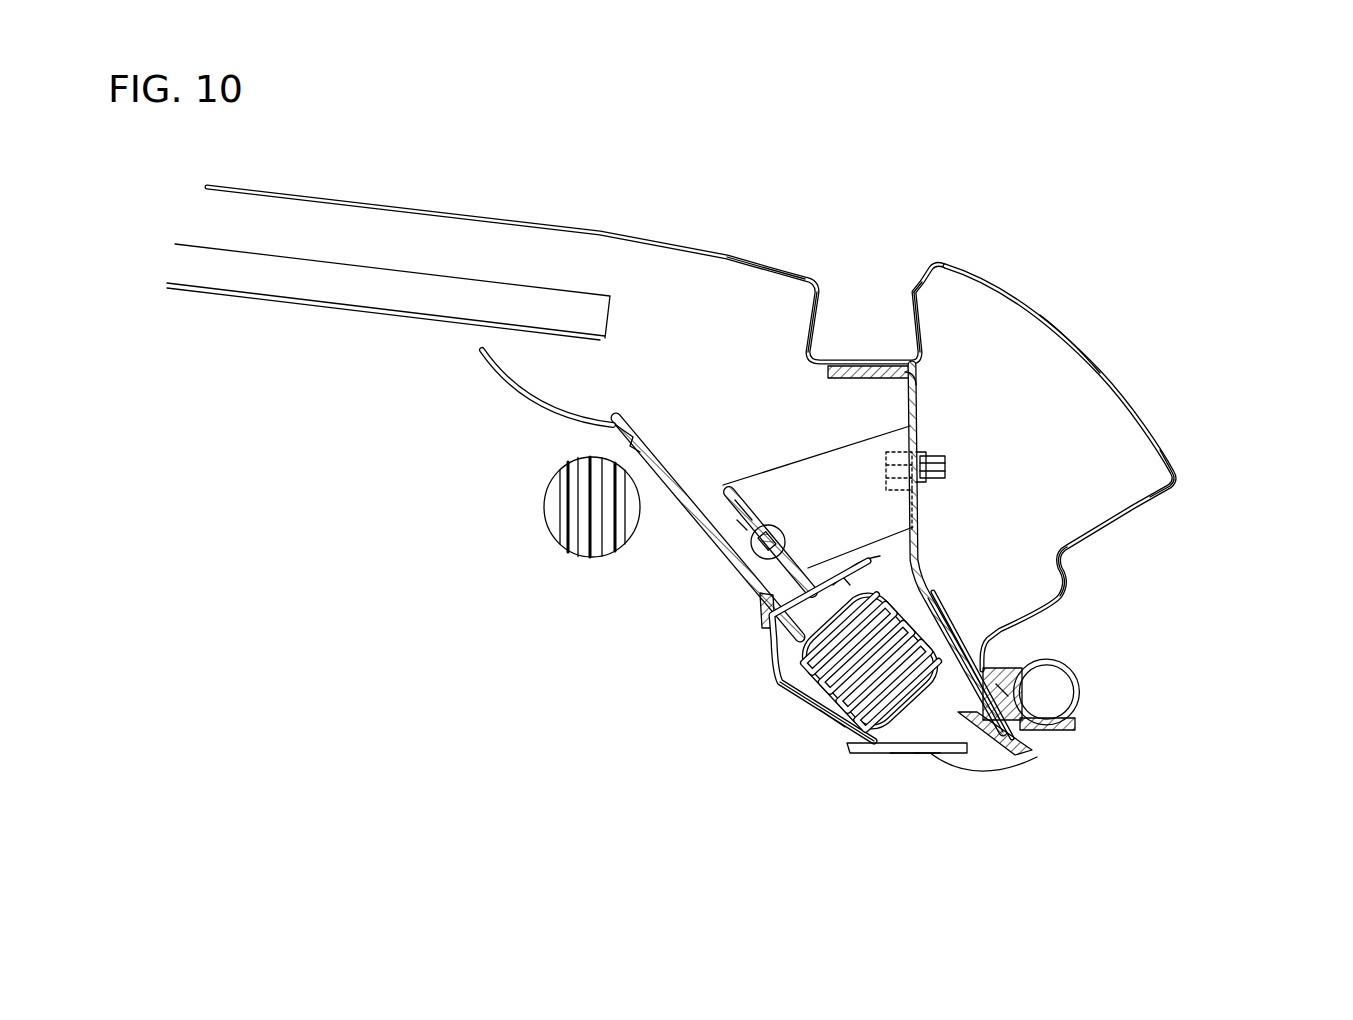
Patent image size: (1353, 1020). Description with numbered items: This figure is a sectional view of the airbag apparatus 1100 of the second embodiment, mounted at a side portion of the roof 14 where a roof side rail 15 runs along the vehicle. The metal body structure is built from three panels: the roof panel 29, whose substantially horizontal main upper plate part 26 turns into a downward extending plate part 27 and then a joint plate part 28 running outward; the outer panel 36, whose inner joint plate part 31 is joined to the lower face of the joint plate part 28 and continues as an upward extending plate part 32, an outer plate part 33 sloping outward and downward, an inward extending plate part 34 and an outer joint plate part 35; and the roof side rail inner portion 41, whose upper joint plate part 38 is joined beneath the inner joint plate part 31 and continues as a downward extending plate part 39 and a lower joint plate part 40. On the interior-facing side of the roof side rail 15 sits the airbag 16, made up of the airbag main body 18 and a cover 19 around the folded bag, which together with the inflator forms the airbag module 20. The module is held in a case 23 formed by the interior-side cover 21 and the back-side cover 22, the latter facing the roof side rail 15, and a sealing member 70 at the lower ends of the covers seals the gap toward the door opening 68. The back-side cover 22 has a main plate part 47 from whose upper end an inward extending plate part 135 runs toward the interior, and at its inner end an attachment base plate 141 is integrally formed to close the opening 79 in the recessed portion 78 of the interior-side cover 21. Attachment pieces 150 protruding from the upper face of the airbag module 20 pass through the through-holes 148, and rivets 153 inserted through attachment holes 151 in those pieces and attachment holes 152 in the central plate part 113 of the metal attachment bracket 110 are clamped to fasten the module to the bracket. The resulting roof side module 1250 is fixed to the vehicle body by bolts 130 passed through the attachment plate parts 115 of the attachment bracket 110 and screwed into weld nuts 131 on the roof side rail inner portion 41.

The roof 14 is at (462, 203).
The roof side rail 15 is at (1014, 289).
The airbag 16 is at (813, 727).
The airbag main body 18 is at (848, 740).
The cover 19 is at (802, 703).
The airbag module 20 is at (838, 735).
The interior-side cover 21 is at (903, 760).
The back-side cover 22 is at (932, 607).
The case 23 is at (870, 757).
The main upper plate part 26 is at (637, 230).
The downward extending plate part 27 is at (820, 306).
The joint plate part 28 is at (853, 356).
The roof panel 29 is at (730, 252).
The inner joint plate part 31 is at (898, 352).
The upward extending plate part 32 is at (917, 323).
The outer plate part 33 is at (1077, 337).
The inward extending plate part 34 is at (1098, 534).
The outer joint plate part 35 is at (1030, 752).
The outer panel 36 is at (1183, 480).
The upper joint plate part 38 is at (918, 373).
The downward extending plate part 39 is at (918, 410).
The lower joint plate part 40 is at (1002, 690).
The roof side rail inner portion 41 is at (932, 522).
The main plate part 47 is at (937, 637).
The door opening 68 is at (1058, 741).
The sealing member 70 is at (1085, 683).
The recessed portion 78 is at (672, 508).
The opening 79 is at (623, 437).
The attachment bracket 110 is at (764, 462).
The central plate part 113 is at (752, 527).
The attachment plate parts 115 is at (920, 520).
The bolts 130 is at (946, 470).
The weld nuts 131 is at (928, 455).
The inward extending plate part 135 is at (843, 582).
The attachment base plate 141 is at (633, 414).
The through-holes 148 is at (850, 556).
The attachment pieces 150 is at (740, 524).
The attachment holes 151 is at (757, 554).
The attachment holes 152 is at (780, 532).
The rivets 153 is at (786, 547).
The airbag apparatus 1100 is at (812, 805).
The roof side module 1250 is at (924, 767).